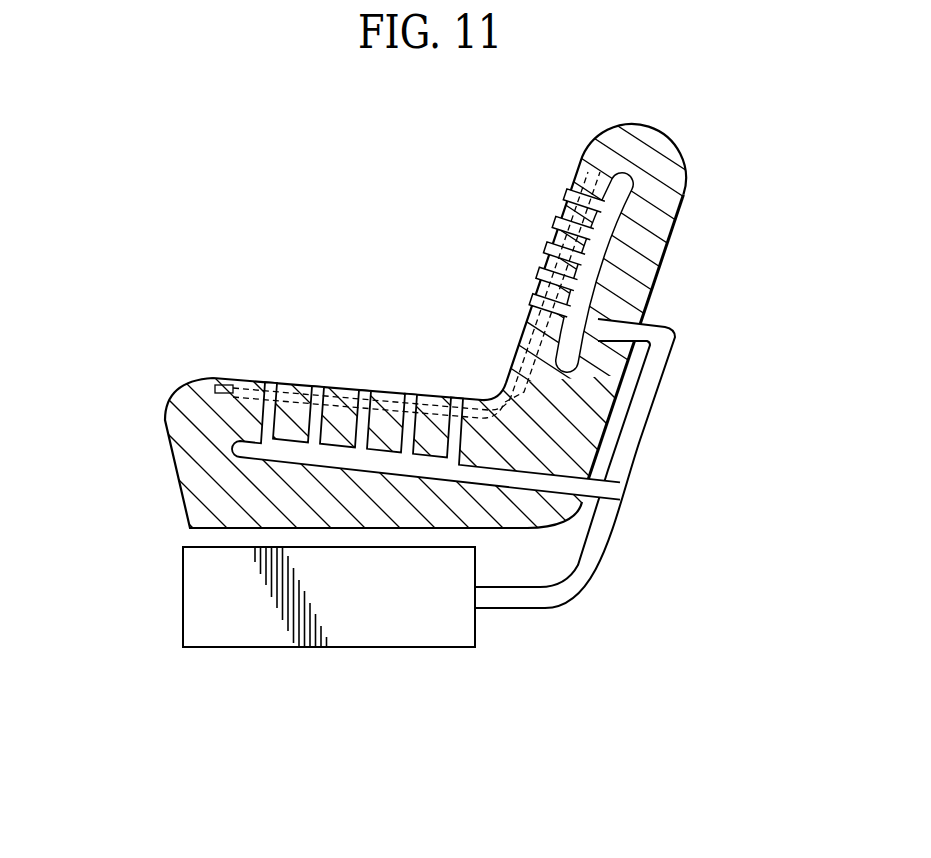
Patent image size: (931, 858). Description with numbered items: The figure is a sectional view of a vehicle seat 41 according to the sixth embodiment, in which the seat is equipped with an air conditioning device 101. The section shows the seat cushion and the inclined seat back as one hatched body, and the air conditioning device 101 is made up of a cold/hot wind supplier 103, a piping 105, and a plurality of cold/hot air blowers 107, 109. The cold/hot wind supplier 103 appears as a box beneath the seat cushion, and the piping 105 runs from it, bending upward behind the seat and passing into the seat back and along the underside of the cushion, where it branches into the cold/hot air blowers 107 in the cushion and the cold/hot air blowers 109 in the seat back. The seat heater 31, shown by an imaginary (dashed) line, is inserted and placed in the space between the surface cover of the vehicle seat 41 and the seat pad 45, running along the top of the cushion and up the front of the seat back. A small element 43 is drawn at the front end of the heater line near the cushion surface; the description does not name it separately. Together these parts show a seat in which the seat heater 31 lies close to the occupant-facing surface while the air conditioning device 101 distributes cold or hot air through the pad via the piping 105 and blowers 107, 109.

The seat heater 31 is at (400, 385).
The vehicle seat 41 is at (676, 268).
The connector 43 is at (225, 378).
The seat pad 45 is at (208, 420).
The air conditioning device 101 is at (461, 465).
The cold/hot wind supplier 103 is at (408, 650).
The piping 105 is at (622, 500).
The cold/hot air blowers 107 is at (278, 384).
The cold/hot air blowers 109 is at (535, 287).